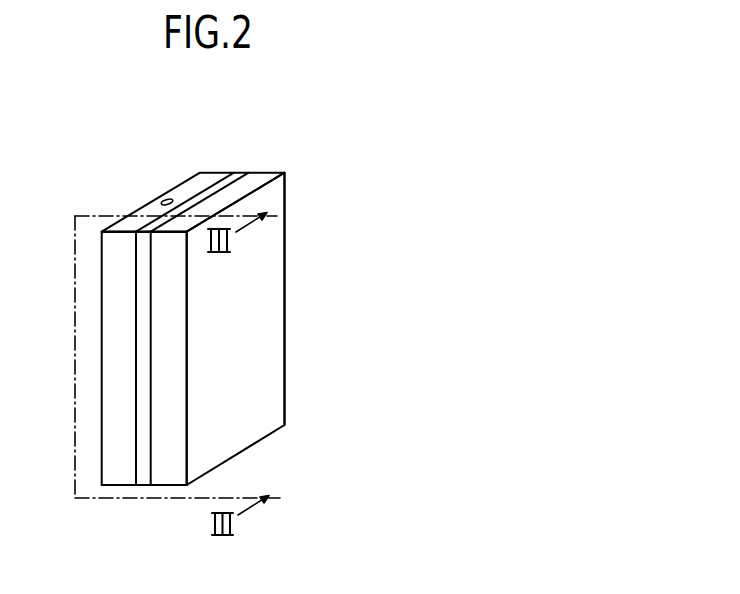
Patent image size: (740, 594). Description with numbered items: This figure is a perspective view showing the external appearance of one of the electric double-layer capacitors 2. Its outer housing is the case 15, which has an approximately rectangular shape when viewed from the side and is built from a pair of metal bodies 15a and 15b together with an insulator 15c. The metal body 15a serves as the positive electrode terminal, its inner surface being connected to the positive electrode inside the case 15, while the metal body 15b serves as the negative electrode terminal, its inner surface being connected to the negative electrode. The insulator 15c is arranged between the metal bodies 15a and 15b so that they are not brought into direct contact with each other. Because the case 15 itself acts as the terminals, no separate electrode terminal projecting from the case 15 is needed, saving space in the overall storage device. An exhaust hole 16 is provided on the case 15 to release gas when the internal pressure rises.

The electric double-layer capacitor 2 is at (350, 307).
The case 15 is at (323, 108).
The metal body 15a is at (286, 197).
The metal body 15b is at (216, 171).
The insulator 15c is at (242, 171).
The exhaust hole 16 is at (164, 197).